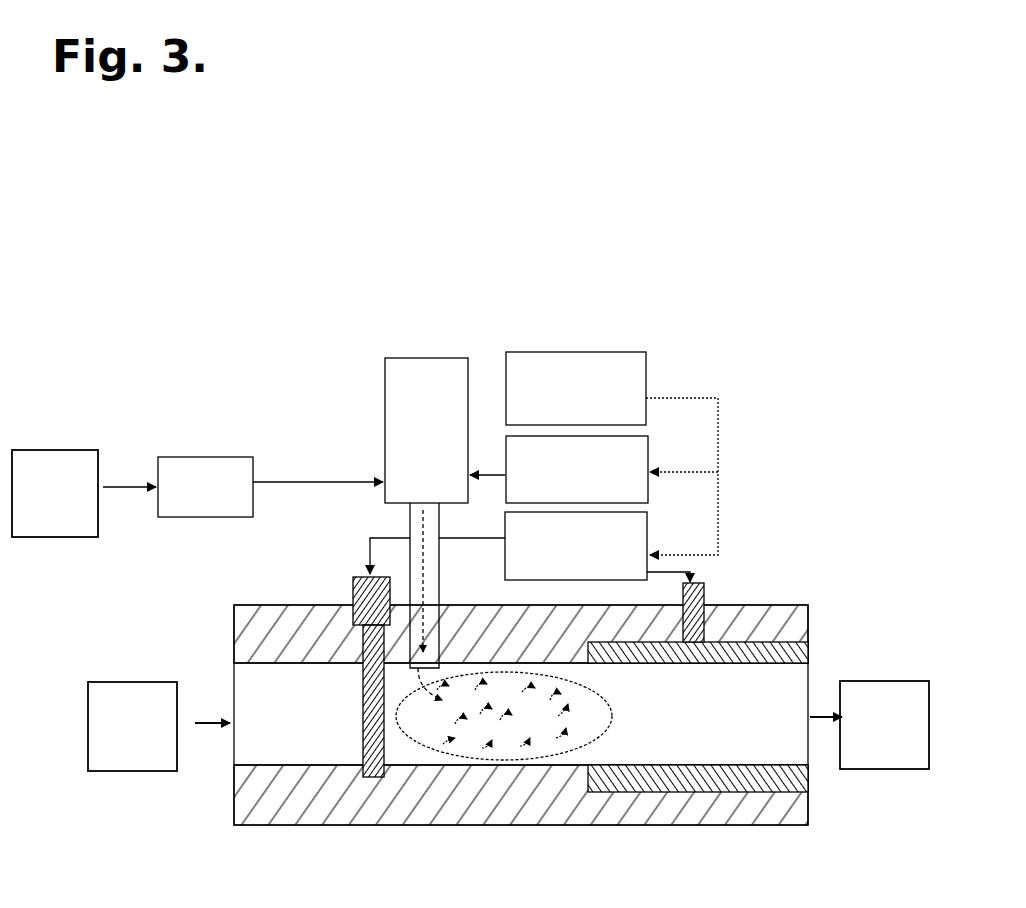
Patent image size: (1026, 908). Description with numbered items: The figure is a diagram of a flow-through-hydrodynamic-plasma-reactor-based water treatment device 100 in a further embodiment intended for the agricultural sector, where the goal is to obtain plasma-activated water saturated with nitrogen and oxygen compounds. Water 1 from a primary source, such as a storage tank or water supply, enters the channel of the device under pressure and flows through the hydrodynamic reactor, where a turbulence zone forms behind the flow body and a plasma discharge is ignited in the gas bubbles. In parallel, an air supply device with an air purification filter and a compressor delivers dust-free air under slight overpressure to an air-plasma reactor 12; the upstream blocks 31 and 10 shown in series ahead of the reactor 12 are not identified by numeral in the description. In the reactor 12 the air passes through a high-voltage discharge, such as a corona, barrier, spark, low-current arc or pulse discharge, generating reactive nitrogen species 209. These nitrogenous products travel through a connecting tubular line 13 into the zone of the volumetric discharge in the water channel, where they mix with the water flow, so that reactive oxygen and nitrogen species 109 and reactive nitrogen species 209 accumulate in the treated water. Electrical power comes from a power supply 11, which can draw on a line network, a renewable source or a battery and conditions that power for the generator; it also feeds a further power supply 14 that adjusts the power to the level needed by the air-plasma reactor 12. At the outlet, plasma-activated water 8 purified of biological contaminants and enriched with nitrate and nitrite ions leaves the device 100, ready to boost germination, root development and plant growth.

The water treatment device 100 is at (152, 121).
The power supply 31 is at (57, 540).
The control unit 10 is at (226, 448).
The air-plasma reactor 12 is at (384, 414).
The connecting tubular line 13 is at (404, 521).
The power supply 11 is at (652, 370).
The further power supply 14 is at (650, 448).
The water 1 is at (130, 775).
The plasma-activated water 8 is at (890, 773).
The reactive nitrogen species 209 is at (427, 724).
The reactive oxygen and nitrogen species 109 is at (528, 744).